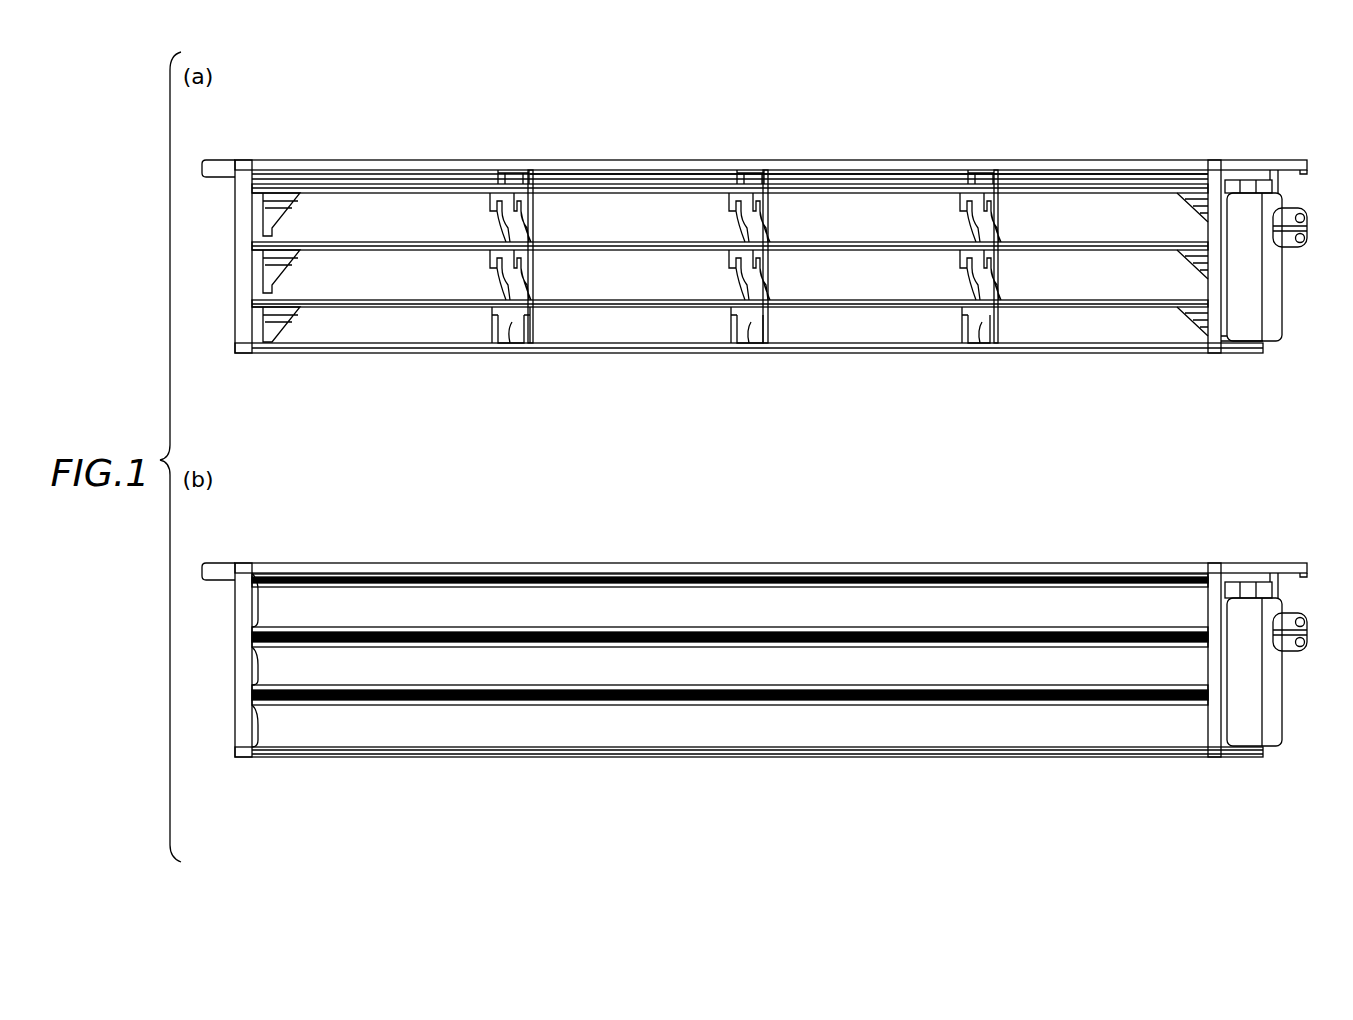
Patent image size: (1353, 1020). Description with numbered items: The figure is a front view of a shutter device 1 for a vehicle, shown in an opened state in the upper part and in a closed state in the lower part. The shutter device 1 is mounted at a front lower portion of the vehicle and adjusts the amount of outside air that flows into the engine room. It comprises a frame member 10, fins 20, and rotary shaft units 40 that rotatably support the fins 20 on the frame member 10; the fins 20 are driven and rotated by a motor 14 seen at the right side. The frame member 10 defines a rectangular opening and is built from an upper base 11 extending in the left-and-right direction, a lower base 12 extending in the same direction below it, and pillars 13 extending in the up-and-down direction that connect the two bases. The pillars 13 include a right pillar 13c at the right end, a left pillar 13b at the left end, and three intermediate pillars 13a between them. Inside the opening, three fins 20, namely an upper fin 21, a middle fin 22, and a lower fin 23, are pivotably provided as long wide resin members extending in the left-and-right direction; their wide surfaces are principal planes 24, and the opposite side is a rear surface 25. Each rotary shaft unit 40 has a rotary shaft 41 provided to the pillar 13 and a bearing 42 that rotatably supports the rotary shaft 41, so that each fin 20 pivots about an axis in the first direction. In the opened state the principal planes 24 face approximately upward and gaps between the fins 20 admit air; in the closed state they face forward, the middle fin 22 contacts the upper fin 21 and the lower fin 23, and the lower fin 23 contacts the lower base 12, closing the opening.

The shutter device for a vehicle 1 is at (785, 131).
The frame member 10 is at (1078, 161).
The upper base 11 is at (661, 160).
The lower base 12 is at (658, 354).
The pillars 13 is at (727, 494).
The intermediate pillars 13a is at (506, 348).
The left pillar 13b is at (243, 348).
The right pillar 13c is at (1212, 350).
The motor 14 is at (1273, 289).
The fins 20 is at (730, 450).
The upper fin 21 is at (376, 184).
The middle fin 22 is at (878, 240).
The lower fin 23 is at (1090, 308).
The principal planes 24 is at (568, 182).
The rear surface 25 is at (596, 200).
The rotary shaft units 40 is at (728, 221).
The rotary shaft 41 is at (756, 212).
The bearing 42 is at (735, 196).